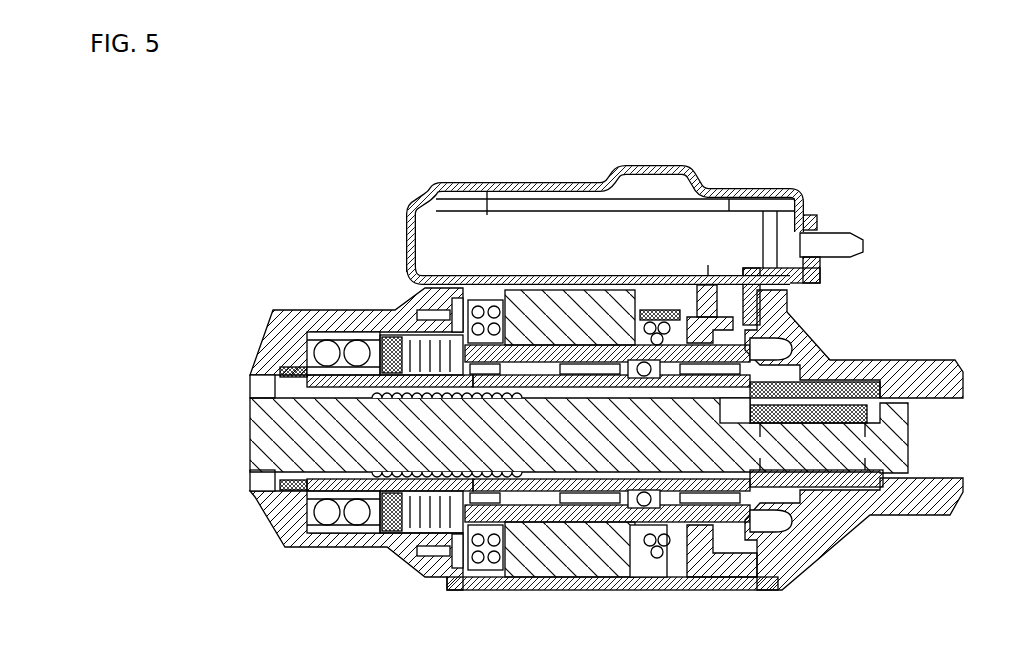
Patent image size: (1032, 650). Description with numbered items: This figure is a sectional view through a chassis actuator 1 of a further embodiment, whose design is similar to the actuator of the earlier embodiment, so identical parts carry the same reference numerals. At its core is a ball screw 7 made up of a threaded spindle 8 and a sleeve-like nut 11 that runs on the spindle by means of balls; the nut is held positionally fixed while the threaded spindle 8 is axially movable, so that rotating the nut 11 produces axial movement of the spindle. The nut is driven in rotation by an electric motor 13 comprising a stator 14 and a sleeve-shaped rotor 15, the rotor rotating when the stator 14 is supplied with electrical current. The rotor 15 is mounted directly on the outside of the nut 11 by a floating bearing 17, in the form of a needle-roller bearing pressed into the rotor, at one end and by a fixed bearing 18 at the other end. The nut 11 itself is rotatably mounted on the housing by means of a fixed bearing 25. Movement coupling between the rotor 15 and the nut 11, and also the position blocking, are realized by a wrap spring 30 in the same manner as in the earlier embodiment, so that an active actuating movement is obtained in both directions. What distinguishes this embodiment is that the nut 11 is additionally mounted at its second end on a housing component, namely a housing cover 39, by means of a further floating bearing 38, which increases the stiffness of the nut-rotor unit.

The chassis actuator 1 is at (932, 246).
The ball screw 7 is at (205, 499).
The threaded spindle 8 is at (263, 441).
The nut 11 is at (415, 512).
The electric motor 13 is at (661, 251).
The stator 14 is at (590, 310).
The rotor 15 is at (612, 362).
The floating bearing 17 is at (495, 508).
The fixed bearing 18 is at (643, 508).
The fixed bearing 25 is at (308, 320).
The wrap spring 30 is at (395, 312).
The floating bearing 38 is at (775, 327).
The housing cover 39 is at (742, 355).